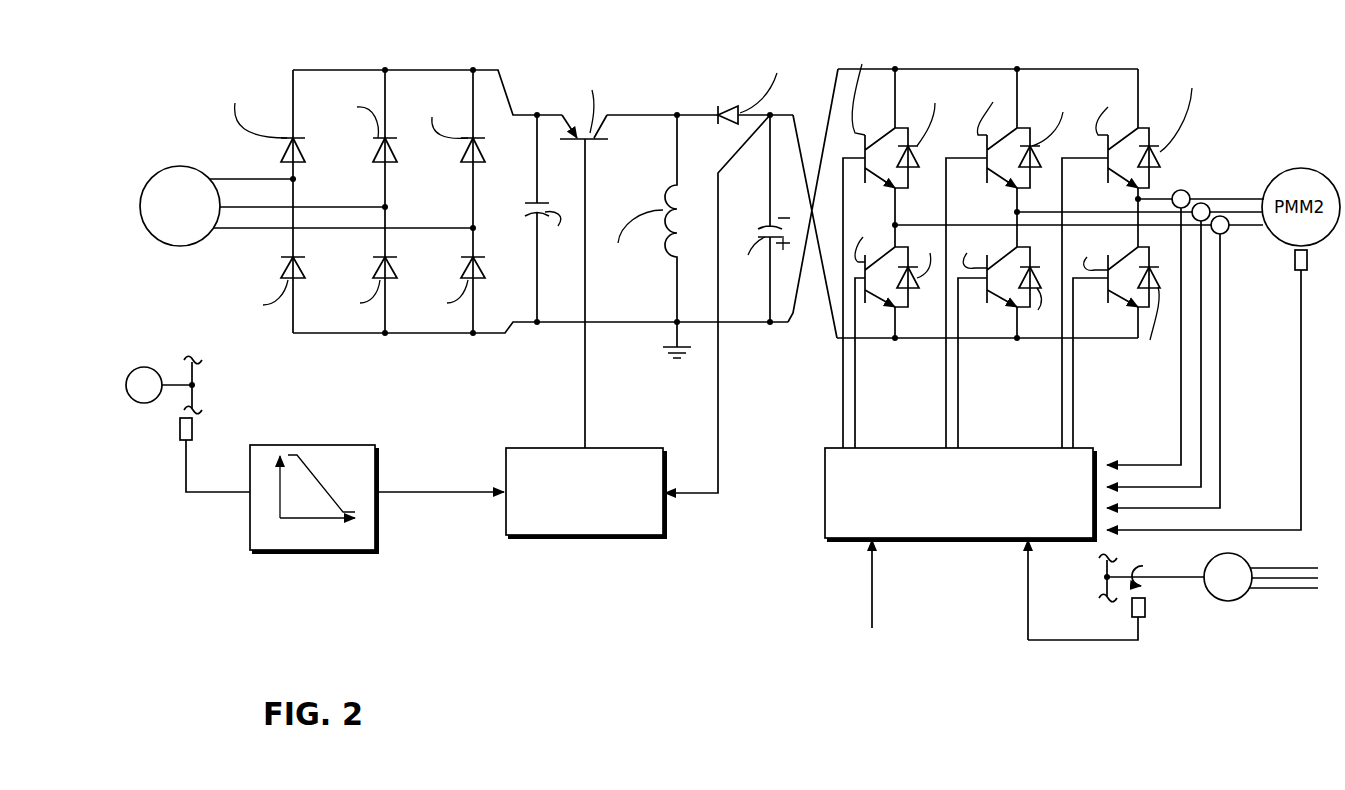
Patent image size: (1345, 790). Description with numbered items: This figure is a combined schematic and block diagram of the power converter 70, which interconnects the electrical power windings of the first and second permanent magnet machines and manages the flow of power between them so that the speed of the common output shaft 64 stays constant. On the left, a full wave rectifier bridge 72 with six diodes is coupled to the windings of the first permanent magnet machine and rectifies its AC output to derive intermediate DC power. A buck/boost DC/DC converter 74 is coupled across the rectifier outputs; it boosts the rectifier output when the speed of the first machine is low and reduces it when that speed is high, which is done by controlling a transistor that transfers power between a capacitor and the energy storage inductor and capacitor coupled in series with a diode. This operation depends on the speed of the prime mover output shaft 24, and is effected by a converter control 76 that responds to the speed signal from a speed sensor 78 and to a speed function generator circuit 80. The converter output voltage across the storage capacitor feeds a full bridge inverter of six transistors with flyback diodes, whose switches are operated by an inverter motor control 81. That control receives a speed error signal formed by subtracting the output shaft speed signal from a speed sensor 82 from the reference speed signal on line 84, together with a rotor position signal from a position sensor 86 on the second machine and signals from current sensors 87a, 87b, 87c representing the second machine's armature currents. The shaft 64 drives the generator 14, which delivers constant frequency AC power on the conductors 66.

The full wave rectifier bridge 72 is at (358, 58).
The buck/boost DC/DC converter 74 is at (648, 111).
The power converter 70 is at (708, 55).
The speed sensor 78 is at (1061, 61).
The output shaft of the prime mover 24 is at (168, 381).
The speed function generator circuit 80 is at (352, 447).
The converter control 76 is at (627, 540).
The inverter motor control 81 is at (823, 488).
The line 84 is at (870, 602).
The speed sensor 82 is at (1145, 605).
The common output shaft 64 is at (1192, 580).
The generator 14 is at (1233, 600).
The conductors 66 is at (1290, 568).
The position sensor 86 is at (1308, 267).
The current sensor 87a is at (1186, 191).
The current sensor 87b is at (1204, 204).
The current sensor 87c is at (1226, 217).